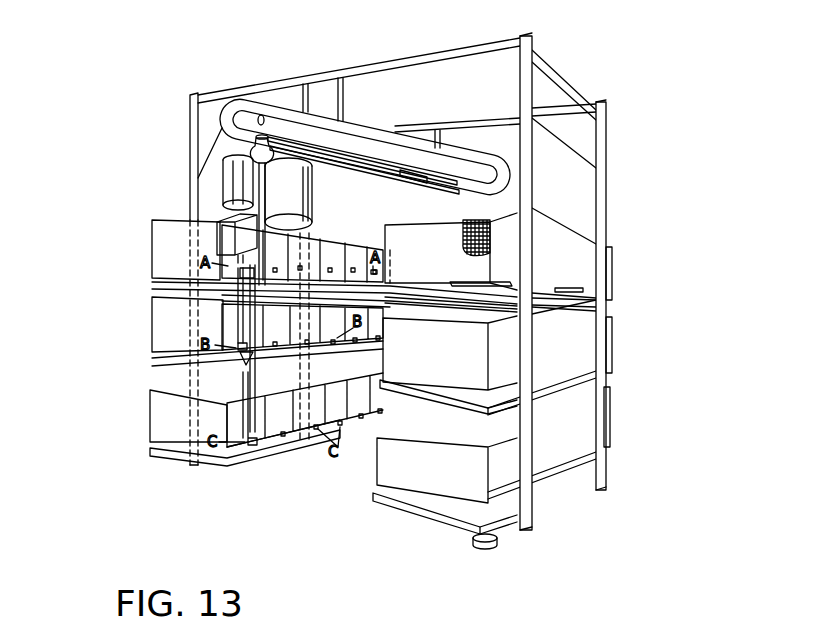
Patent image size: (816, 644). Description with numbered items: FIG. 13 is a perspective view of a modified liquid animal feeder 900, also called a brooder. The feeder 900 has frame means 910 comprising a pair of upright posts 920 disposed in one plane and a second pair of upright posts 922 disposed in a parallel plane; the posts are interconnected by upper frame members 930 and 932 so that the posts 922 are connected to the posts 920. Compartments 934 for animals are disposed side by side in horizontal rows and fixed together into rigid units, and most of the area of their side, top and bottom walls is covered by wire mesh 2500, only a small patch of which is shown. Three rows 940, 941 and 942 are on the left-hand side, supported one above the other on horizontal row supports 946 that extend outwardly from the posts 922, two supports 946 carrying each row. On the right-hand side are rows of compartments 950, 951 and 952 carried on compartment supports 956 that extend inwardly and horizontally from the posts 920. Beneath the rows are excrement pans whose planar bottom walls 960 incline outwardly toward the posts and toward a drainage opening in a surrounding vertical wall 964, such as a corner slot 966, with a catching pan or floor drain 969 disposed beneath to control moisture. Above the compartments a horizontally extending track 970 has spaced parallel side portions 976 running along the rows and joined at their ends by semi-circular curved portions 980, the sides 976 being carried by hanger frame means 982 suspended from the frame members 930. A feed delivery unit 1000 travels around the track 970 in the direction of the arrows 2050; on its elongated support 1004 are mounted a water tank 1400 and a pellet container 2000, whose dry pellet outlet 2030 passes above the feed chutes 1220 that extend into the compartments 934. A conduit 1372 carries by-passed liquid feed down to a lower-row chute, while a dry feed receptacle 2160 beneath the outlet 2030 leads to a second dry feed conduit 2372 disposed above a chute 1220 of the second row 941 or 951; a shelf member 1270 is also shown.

The liquid animal feeder 900 is at (611, 197).
The frame means 910 is at (606, 160).
The upright posts 920 is at (580, 488).
The upper frame member 930 is at (393, 60).
The upper frame member 932 is at (563, 90).
The compartments 934 is at (362, 247).
The row of compartments 940 is at (150, 400).
The row of compartments 941 is at (152, 300).
The row of compartments 942 is at (152, 258).
The row supports 946 is at (200, 266).
The row of compartments 950 is at (612, 410).
The row of compartments 951 is at (612, 352).
The row of compartments 952 is at (612, 266).
The compartment supports 956 is at (565, 288).
The bottom wall 960 is at (467, 398).
The vertical wall 964 is at (486, 412).
The drainage slot 966 is at (488, 302).
The catching pan or floor drain 969 is at (470, 544).
The track means 970 is at (328, 105).
The side portions 976 is at (372, 115).
The curved portions 980 is at (251, 92).
The hanger frame means 982 is at (328, 100).
The upright posts 922 is at (193, 155).
The feed delivery unit 1000 is at (224, 173).
The elongated support 1004 is at (250, 192).
The feed chute 1220 is at (306, 268).
The shelf plank 1270 is at (265, 302).
The conduit 1372 is at (255, 395).
The water tank 1400 is at (314, 192).
The pellet container 2000 is at (220, 223).
The dry pellet outlet 2030 is at (240, 262).
The arrows 2050 is at (325, 268).
The dry feed receptacle 2160 is at (227, 289).
The second dry feed conduit 2372 is at (238, 322).
The wire mesh 2500 is at (462, 237).